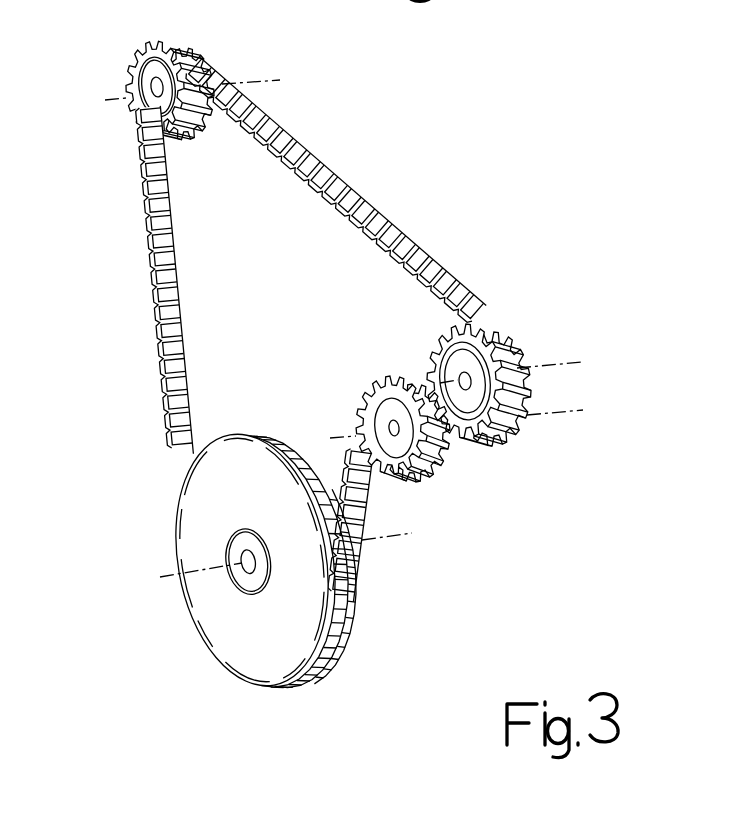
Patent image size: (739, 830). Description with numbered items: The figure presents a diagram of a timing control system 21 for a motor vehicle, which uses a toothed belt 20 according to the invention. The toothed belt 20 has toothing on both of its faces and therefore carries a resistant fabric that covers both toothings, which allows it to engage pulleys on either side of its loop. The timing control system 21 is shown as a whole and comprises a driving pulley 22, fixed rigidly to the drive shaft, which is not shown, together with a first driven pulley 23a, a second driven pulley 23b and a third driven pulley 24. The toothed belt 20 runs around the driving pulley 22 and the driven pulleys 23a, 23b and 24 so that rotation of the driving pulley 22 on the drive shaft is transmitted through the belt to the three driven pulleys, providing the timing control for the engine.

The toothed belt 20 is at (150, 290).
The timing control system 21 is at (420, 211).
The driving pulley 22 is at (207, 517).
The first driven pulley 23a is at (133, 61).
The second driven pulley 23b is at (407, 461).
The third driven pulley 24 is at (476, 345).